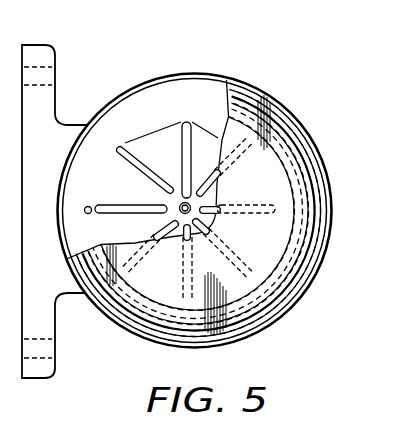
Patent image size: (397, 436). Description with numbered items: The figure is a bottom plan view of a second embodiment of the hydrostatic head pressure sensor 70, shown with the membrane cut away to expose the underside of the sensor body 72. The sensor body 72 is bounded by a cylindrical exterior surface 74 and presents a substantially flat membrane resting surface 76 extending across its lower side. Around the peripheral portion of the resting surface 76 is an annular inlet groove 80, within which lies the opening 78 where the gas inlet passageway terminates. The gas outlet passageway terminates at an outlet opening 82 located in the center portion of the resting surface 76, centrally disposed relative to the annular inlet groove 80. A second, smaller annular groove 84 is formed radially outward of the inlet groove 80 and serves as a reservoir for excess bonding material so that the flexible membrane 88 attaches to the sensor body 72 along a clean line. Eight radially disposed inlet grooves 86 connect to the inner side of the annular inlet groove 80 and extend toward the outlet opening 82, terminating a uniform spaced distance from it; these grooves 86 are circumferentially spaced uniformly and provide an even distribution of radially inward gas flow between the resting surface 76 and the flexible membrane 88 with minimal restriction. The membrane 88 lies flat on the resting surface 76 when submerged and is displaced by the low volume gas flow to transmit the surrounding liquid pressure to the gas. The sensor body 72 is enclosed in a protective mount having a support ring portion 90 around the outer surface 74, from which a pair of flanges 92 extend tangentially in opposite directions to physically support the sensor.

The hydrostatic head pressure sensor 70 is at (299, 108).
The sensor body 72 is at (117, 170).
The cylindrical exterior surface 74 is at (178, 78).
The resting surface 76 is at (202, 137).
The inlet opening 78 is at (86, 205).
The annular inlet groove 80 is at (146, 121).
The outlet opening 82 is at (181, 204).
The second annular groove 84 is at (211, 100).
The radially disposed inlet grooves 86 is at (218, 183).
The flexible membrane 88 is at (254, 163).
The support ring portion 90 is at (285, 302).
The flanges 92 is at (45, 58).